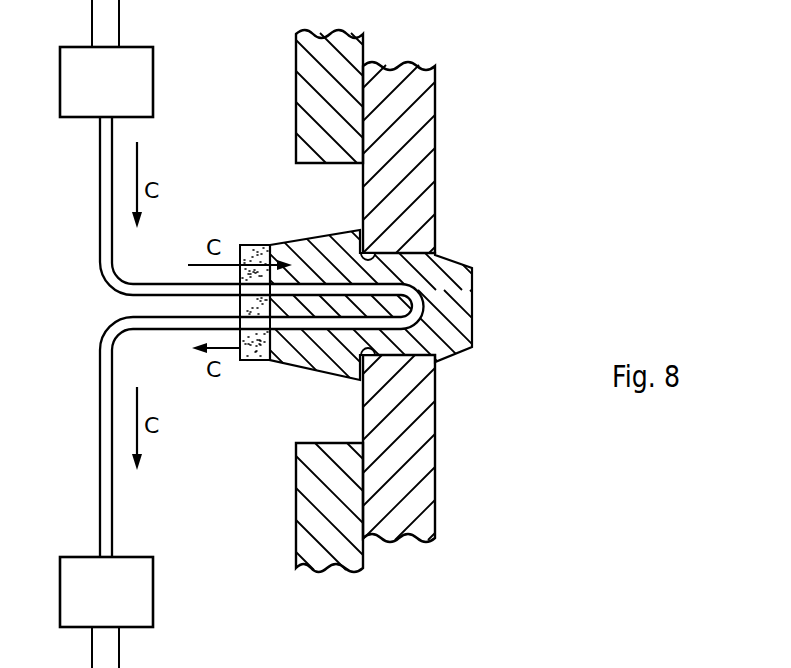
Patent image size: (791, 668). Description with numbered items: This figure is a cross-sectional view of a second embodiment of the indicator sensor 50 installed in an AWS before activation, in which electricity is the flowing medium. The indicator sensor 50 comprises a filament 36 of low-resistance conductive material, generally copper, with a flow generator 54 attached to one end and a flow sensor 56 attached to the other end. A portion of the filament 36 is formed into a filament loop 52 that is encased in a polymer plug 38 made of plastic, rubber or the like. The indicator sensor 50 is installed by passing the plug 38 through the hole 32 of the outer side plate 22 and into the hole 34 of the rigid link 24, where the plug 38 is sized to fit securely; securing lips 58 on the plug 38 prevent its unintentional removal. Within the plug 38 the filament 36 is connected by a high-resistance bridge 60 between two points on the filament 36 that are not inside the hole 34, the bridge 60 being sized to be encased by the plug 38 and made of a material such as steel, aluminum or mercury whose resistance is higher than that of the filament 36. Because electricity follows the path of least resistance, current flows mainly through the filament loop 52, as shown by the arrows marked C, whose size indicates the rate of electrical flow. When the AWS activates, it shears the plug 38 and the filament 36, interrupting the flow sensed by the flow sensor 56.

The outer side plate 22 is at (338, 549).
The rigid link 24 is at (423, 488).
The hole 32 is at (325, 415).
The hole 34 is at (403, 357).
The filament 36 is at (98, 261).
The plug 38 is at (470, 285).
The indicator sensor 50 is at (262, 166).
The filament loop 52 is at (427, 312).
The flow generator 54 is at (117, 94).
The flow sensor 56 is at (117, 604).
The securing lips 58 is at (353, 248).
The high-resistance bridge 60 is at (256, 245).